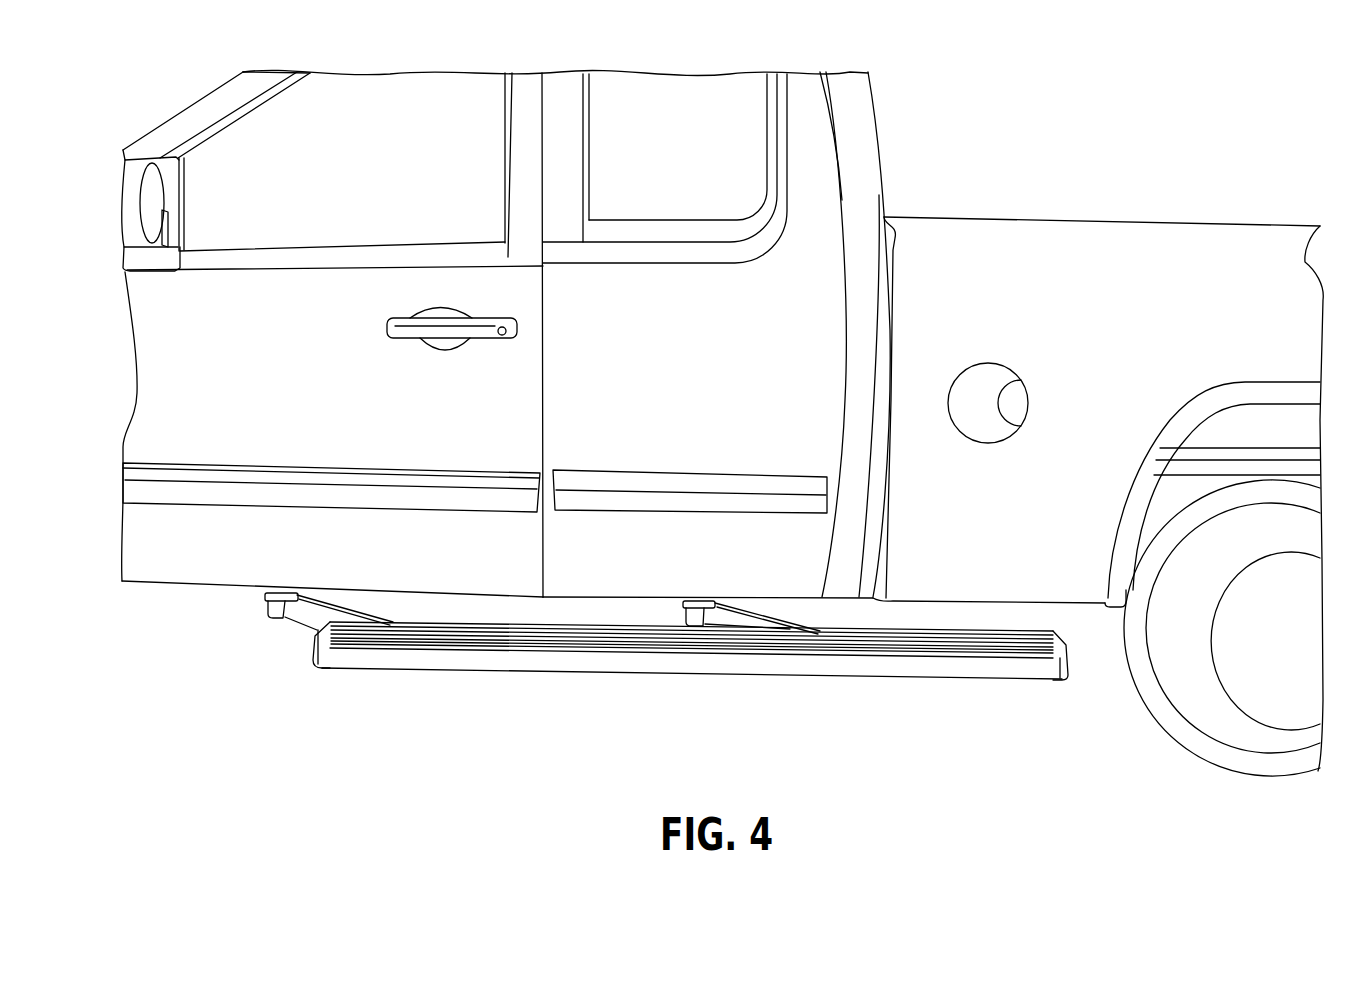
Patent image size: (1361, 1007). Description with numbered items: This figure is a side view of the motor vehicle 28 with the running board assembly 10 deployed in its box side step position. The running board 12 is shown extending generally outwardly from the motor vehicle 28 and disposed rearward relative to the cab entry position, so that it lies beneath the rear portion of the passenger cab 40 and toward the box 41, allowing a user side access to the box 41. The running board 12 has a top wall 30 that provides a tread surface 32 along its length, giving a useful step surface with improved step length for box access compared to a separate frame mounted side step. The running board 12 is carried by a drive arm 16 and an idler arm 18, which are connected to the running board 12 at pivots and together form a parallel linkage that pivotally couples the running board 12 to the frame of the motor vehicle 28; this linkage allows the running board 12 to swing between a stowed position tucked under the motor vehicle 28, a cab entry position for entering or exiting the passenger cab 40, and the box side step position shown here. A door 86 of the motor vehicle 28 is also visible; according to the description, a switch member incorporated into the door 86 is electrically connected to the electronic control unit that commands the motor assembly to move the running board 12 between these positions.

The running board assembly 10 is at (687, 678).
The running board 12 is at (712, 697).
The drive arm 16 is at (330, 601).
The idler arm 18 is at (747, 614).
The motor vehicle 28 is at (1098, 448).
The top wall 30 is at (1067, 652).
The tread surface 32 is at (668, 632).
The passenger cab 40 is at (506, 399).
The box 41 is at (1062, 217).
The door 86 is at (602, 573).